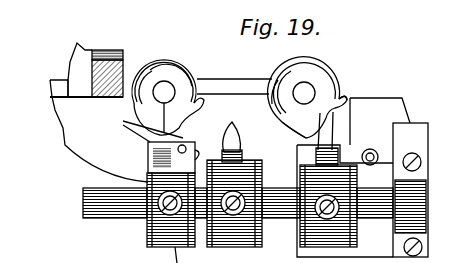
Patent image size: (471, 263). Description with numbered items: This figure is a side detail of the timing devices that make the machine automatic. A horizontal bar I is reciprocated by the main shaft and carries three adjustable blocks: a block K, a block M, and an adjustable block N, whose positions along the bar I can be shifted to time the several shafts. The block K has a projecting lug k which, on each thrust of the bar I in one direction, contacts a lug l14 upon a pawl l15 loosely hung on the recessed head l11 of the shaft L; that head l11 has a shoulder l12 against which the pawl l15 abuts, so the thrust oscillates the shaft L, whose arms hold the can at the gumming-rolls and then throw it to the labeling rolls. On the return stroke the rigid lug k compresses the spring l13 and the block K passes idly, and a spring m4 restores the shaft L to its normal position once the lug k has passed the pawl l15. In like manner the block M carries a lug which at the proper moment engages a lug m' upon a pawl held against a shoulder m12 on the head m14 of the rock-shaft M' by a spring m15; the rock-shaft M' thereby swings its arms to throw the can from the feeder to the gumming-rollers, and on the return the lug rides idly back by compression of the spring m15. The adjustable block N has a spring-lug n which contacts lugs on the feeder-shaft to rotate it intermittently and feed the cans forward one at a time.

The rock-shaft M' is at (164, 81).
The spring m4 is at (171, 92).
The spring m15 is at (166, 60).
The head m14 is at (188, 69).
The lug m' is at (210, 137).
The shoulder m12 is at (136, 119).
The shaft L is at (271, 76).
The spring l13 is at (307, 95).
The pawl l15 is at (281, 83).
The shoulder l12 is at (275, 108).
The recessed head l11 is at (335, 108).
The lug l14 is at (297, 127).
The lug k is at (334, 124).
The horizontal bar I is at (238, 215).
The adjustable block N is at (147, 228).
The spring-lug n is at (161, 147).
The block M is at (234, 211).
The block K is at (328, 214).